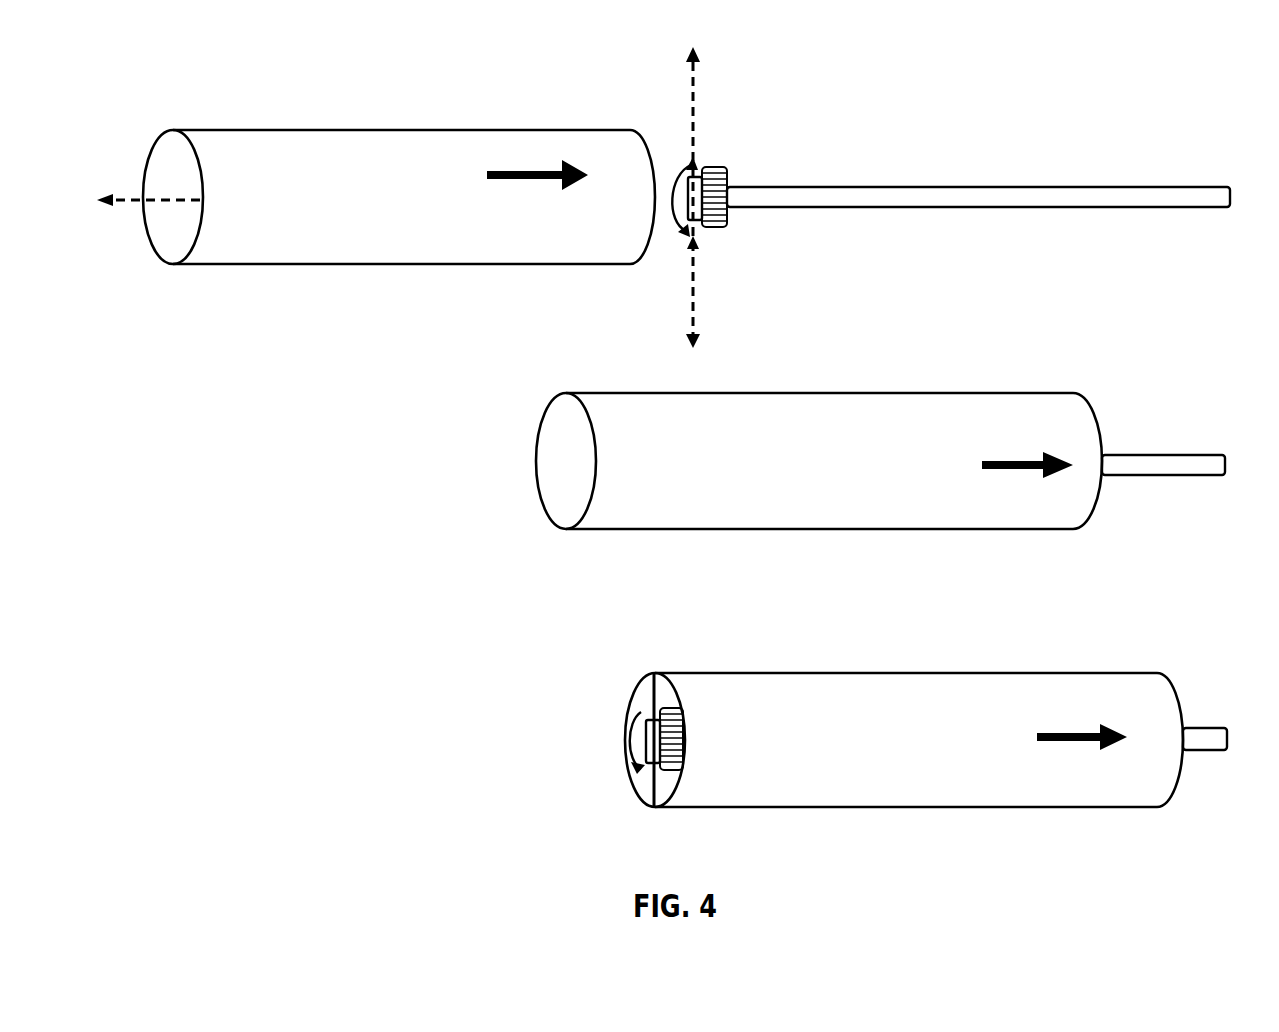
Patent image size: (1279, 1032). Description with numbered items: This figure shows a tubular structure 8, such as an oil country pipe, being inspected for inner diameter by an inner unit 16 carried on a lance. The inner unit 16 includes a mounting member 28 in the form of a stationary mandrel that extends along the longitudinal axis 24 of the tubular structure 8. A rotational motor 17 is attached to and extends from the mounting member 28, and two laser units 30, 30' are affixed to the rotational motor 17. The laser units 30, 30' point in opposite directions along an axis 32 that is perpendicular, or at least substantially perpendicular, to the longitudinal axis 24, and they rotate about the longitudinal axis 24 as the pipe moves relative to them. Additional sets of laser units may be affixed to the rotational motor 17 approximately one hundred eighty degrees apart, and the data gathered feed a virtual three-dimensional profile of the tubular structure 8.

The tubular structure 8 is at (580, 132).
The inner unit 16 is at (745, 167).
The rotational motor 17 is at (712, 167).
The longitudinal axis 24 is at (163, 210).
The mounting member 28 is at (793, 212).
The laser unit 30 is at (659, 425).
The laser unit 30' is at (649, 269).
The axis 32 is at (697, 100).